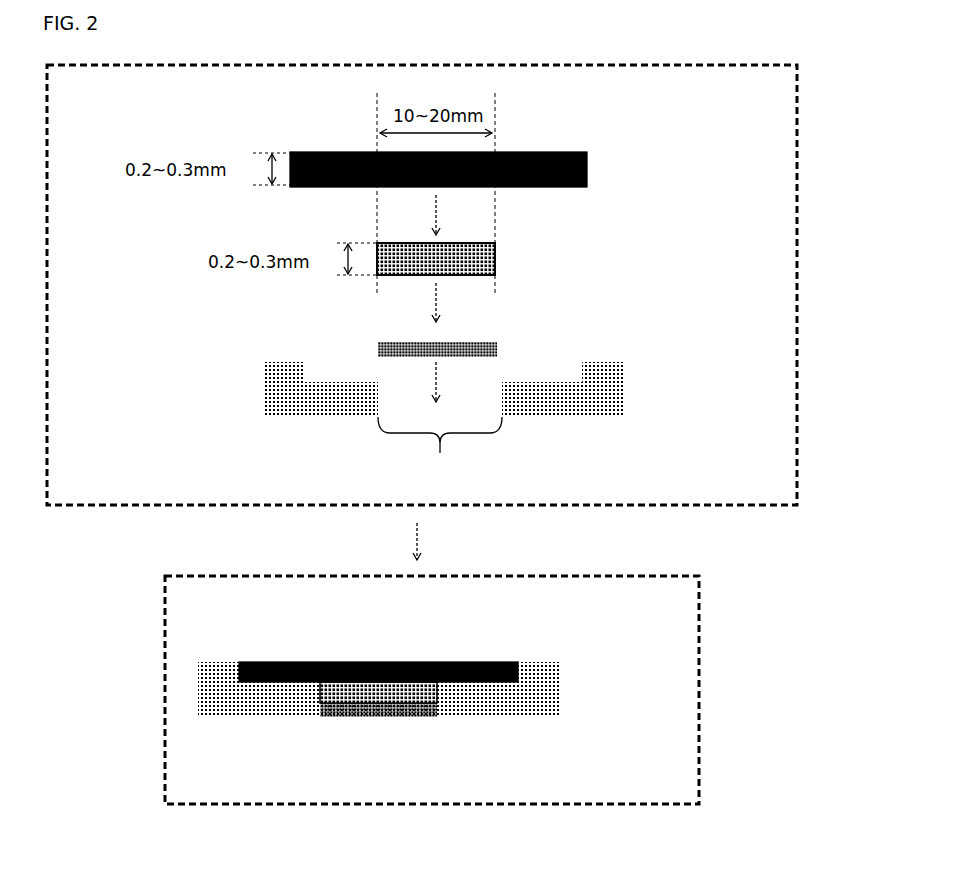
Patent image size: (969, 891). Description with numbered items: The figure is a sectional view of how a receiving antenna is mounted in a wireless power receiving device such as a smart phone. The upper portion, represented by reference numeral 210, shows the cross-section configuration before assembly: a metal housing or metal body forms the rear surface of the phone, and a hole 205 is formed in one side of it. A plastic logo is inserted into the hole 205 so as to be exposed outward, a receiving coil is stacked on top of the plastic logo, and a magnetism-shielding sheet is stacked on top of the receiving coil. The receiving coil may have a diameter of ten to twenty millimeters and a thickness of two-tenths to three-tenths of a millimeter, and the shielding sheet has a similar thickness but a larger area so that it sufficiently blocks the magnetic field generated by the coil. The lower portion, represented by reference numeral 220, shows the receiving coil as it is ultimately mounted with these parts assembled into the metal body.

The hole 205 is at (440, 452).
The mounting cross-section configuration 210 is at (797, 253).
The mounted receiving coil configuration 220 is at (699, 703).